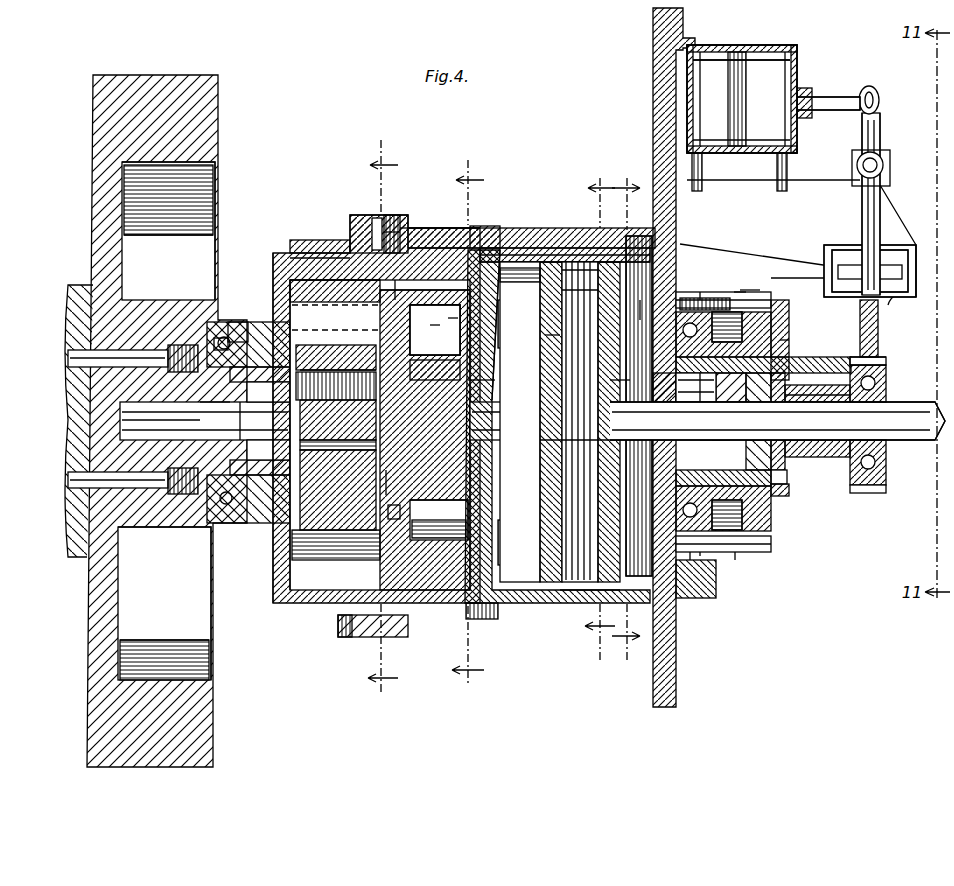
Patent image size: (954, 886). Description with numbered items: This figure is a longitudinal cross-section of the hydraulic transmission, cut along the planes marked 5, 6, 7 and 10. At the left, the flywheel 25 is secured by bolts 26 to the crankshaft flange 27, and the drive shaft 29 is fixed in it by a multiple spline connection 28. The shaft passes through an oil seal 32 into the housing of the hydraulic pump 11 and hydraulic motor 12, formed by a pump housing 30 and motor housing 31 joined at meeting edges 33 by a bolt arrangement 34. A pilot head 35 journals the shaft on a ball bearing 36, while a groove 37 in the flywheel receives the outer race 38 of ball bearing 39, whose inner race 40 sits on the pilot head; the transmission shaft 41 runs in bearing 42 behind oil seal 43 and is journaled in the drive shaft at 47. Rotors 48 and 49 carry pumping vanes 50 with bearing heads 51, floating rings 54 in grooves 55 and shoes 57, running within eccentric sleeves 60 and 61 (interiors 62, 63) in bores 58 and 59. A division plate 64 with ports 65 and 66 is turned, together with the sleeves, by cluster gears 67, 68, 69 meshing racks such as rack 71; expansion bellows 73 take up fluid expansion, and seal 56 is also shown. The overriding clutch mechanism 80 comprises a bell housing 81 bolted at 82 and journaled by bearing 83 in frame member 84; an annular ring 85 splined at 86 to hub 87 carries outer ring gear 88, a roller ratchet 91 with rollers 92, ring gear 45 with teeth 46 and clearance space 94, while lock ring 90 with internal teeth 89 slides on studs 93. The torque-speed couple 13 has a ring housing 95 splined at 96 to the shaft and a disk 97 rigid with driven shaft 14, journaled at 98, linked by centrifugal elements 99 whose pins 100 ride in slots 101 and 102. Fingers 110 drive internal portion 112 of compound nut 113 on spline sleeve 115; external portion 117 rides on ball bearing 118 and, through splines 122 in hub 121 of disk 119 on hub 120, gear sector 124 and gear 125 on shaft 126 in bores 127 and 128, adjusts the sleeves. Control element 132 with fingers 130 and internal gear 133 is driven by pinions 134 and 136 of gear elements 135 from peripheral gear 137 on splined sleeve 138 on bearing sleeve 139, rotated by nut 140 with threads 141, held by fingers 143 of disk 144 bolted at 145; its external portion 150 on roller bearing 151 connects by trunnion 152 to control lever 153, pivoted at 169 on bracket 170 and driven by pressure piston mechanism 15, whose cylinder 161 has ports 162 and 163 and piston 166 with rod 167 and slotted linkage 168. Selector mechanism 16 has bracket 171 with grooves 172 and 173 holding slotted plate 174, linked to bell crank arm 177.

The section line 5- 5 is at (380, 416).
The section line 6- 6 is at (468, 418).
The section line 7- 7 is at (600, 416).
The internal combustion automobile engine 10 is at (626, 416).
The hydraulic pump 11 is at (310, 252).
The hydraulic motor 12 is at (445, 228).
The automatic torque-speed control couple 13 is at (545, 610).
The driven shaft 14 is at (898, 452).
The pressure piston mechanism 15 is at (804, 43).
The selector mechanism 16 is at (920, 262).
The flywheel 25 is at (226, 113).
The bolts 26 is at (72, 355).
The flange 27 is at (80, 538).
The multiple spline connection 28 is at (120, 408).
The drive shaft 29 is at (215, 415).
The pump housing 30 is at (285, 262).
The motor housing 31 is at (448, 230).
The oil seal or packing gland 32 is at (248, 421).
The meeting edges 33 is at (390, 216).
The bolt and tapped-hole arrangement 34 is at (355, 650).
The pilot head or bearing sleeve 35 is at (252, 368).
The ball bearing 36 is at (262, 395).
The annular groove 37 is at (216, 328).
The outer race 38 is at (240, 325).
The ball bearing 39 is at (216, 335).
The inner race 40 is at (238, 478).
The transmission shaft 41 is at (500, 392).
The bearing 42 is at (485, 372).
The oil seal 43 is at (518, 370).
The ring gear 45 is at (775, 330).
The external teeth 46 is at (770, 298).
The journal 47 is at (338, 406).
The pump rotor 48 is at (338, 490).
The motor rotor 49 is at (425, 440).
The pumping vanes 50 is at (340, 325).
The outer bearing head 51 is at (290, 285).
The floating rings 54 is at (370, 372).
The recessed lateral grooves 55 is at (350, 424).
The spacer 56 is at (338, 369).
The shoes 57 is at (365, 362).
The inner bore 58 is at (335, 268).
The inner bore 59 is at (425, 280).
The eccentric sleeve 60 is at (300, 262).
The eccentric sleeve 61 is at (418, 258).
The interior of sleeve 62 is at (350, 318).
The interior of sleeve 63 is at (452, 322).
The division plate 64 is at (392, 481).
The inlet port 65 is at (432, 330).
The outlet port 66 is at (396, 512).
The outer gear 67 is at (374, 222).
The outer gear 68 is at (410, 232).
The inner gear 69 is at (392, 214).
The circular gear rack 71 is at (392, 285).
The expansion bellows 73 is at (496, 364).
The overriding clutch mechanism 80 is at (700, 598).
The bell housing 81 is at (528, 228).
The bolts 82 is at (478, 628).
The bearing 83 is at (704, 556).
The stationary frame member 84 is at (676, 665).
The annular ring 85 is at (784, 345).
The spline 86 is at (786, 360).
The hub portion 87 is at (762, 512).
The outer ring gear 88 is at (706, 290).
The internal teeth 89 is at (768, 322).
The lock ring 90 is at (738, 292).
The roller type frictional ratchet gearing mechanism 91 is at (700, 559).
The rollers 92 is at (702, 300).
The studs 93 is at (770, 550).
The annular clearance space 94 is at (723, 334).
The ring-shaped housing element 95 is at (548, 344).
The spline 96 is at (525, 428).
The ring-shaped disk element 97 is at (577, 262).
The journal 98 is at (550, 470).
The centrifugal elements 99 is at (602, 262).
The pins or studs 100 is at (552, 262).
The contour slots 101 is at (628, 614).
The contour slots 102 is at (572, 604).
The fingers 110 is at (714, 385).
The internal portion 112 is at (688, 385).
The compound nut 113 is at (721, 429).
The helical spline sleeve 115 is at (664, 385).
The external portion 117 is at (678, 428).
The ball bearing 118 is at (716, 432).
The disk 119 is at (648, 310).
The hub 120 is at (618, 385).
The hub 121 is at (740, 560).
The internal helical splines 122 is at (672, 428).
The gear sector 124 is at (684, 245).
The gear 125 is at (638, 236).
The shaft 126 is at (494, 228).
The bore 127 is at (500, 240).
The bore 128 is at (510, 246).
The fingers 130 is at (728, 390).
The control element 132 is at (752, 392).
The internal gear 133 is at (770, 440).
The pinions 134 is at (760, 500).
The gear elements 135 is at (817, 402).
The pinions 136 is at (776, 380).
The peripheral gear 137 is at (830, 440).
The helically splined sleeve 138 is at (790, 388).
The bearing sleeve 139 is at (830, 390).
The nut 140 is at (890, 362).
The internal helical threads 141 is at (838, 421).
The fingers 143 is at (888, 380).
The flanged disk element 144 is at (775, 492).
The bolts 145 is at (778, 482).
The external portion 150 is at (886, 348).
The roller bearing 151 is at (855, 355).
The trunnion engagement 152 is at (886, 414).
The control lever 153 is at (880, 308).
The cylinder 161 is at (764, 48).
The intake port 162 is at (705, 172).
The exhaust port 163 is at (790, 178).
The piston 166 is at (730, 50).
The piston rod 167 is at (826, 95).
The slotted linkage 168 is at (880, 100).
The pivot 169 is at (884, 162).
The rigid bracket 170 is at (888, 205).
The bracket 171 is at (888, 250).
The groove 172 is at (909, 294).
The groove 173 is at (828, 275).
The slotted plate 174 is at (845, 250).
The arm 177 is at (782, 278).